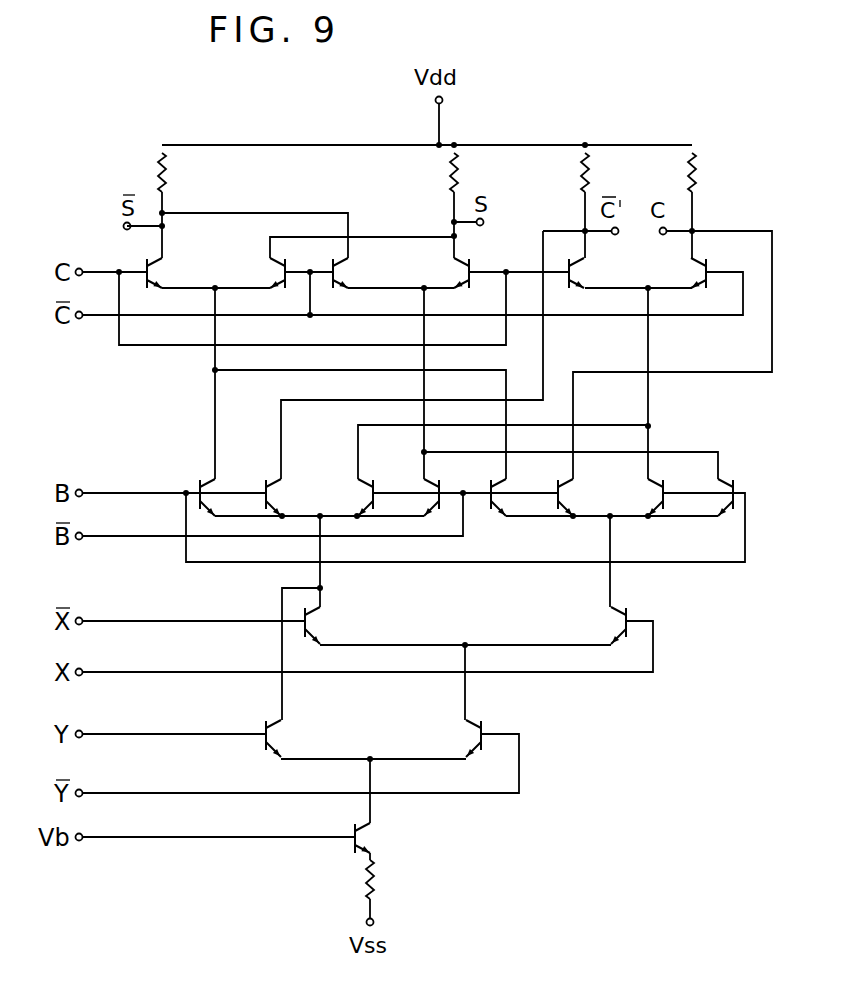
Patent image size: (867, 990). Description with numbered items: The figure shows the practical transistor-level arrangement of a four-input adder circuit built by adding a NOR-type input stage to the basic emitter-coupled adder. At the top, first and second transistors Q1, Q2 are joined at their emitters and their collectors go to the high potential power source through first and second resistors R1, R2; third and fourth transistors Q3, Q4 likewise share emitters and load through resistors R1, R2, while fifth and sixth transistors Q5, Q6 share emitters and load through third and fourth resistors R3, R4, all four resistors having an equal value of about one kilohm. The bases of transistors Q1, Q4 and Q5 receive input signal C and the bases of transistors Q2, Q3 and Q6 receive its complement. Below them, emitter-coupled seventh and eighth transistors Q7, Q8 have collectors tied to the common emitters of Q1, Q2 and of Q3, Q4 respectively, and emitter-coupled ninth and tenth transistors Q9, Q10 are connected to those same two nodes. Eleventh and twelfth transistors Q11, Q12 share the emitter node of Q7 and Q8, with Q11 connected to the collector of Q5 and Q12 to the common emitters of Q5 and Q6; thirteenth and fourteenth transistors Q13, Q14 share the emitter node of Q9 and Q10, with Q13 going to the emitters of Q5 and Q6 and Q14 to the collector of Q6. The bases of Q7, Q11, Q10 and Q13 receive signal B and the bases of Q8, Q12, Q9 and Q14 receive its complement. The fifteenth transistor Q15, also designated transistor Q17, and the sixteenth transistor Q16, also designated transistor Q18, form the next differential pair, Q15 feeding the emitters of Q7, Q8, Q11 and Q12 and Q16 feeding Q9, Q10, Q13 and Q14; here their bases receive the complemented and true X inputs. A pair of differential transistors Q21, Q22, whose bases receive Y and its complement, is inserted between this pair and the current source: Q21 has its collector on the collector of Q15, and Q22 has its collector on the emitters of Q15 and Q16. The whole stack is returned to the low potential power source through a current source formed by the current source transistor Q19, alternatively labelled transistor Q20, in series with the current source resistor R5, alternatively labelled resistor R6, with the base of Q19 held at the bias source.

The first transistor Q1 is at (154, 278).
The second transistor Q2 is at (277, 276).
The third transistor Q3 is at (340, 278).
The fourth transistor Q4 is at (459, 276).
The fifth transistor Q5 is at (576, 278).
The sixth transistor Q6 is at (696, 276).
The seventh transistor Q7 is at (187, 484).
The eighth transistor Q8 is at (415, 485).
The ninth transistor Q9 is at (499, 498).
The tenth transistor Q10 is at (746, 487).
The eleventh transistor Q11 is at (254, 484).
The twelfth transistor Q12 is at (350, 484).
The thirteenth transistor Q13 is at (676, 487).
The fourteenth transistor Q14 is at (566, 498).
The fifteenth transistor Q15 is at (312, 626).
The sixteenth transistor Q16 is at (612, 620).
The fifteenth transistor (alternate designation) Q17 is at (355, 620).
The sixteenth transistor (alternate designation) Q18 is at (572, 620).
The current source transistor Q19 is at (364, 841).
The current source transistor (alternate designation) Q20 is at (405, 838).
The differential transistor Q21 is at (273, 740).
The differential transistor Q22 is at (468, 731).
The first resistor R1 is at (170, 179).
The second resistor R2 is at (447, 177).
The third resistor R3 is at (578, 177).
The fourth resistor R4 is at (699, 182).
The current source resistor R5 is at (376, 886).
The current source resistor (alternate designation) R6 is at (401, 879).